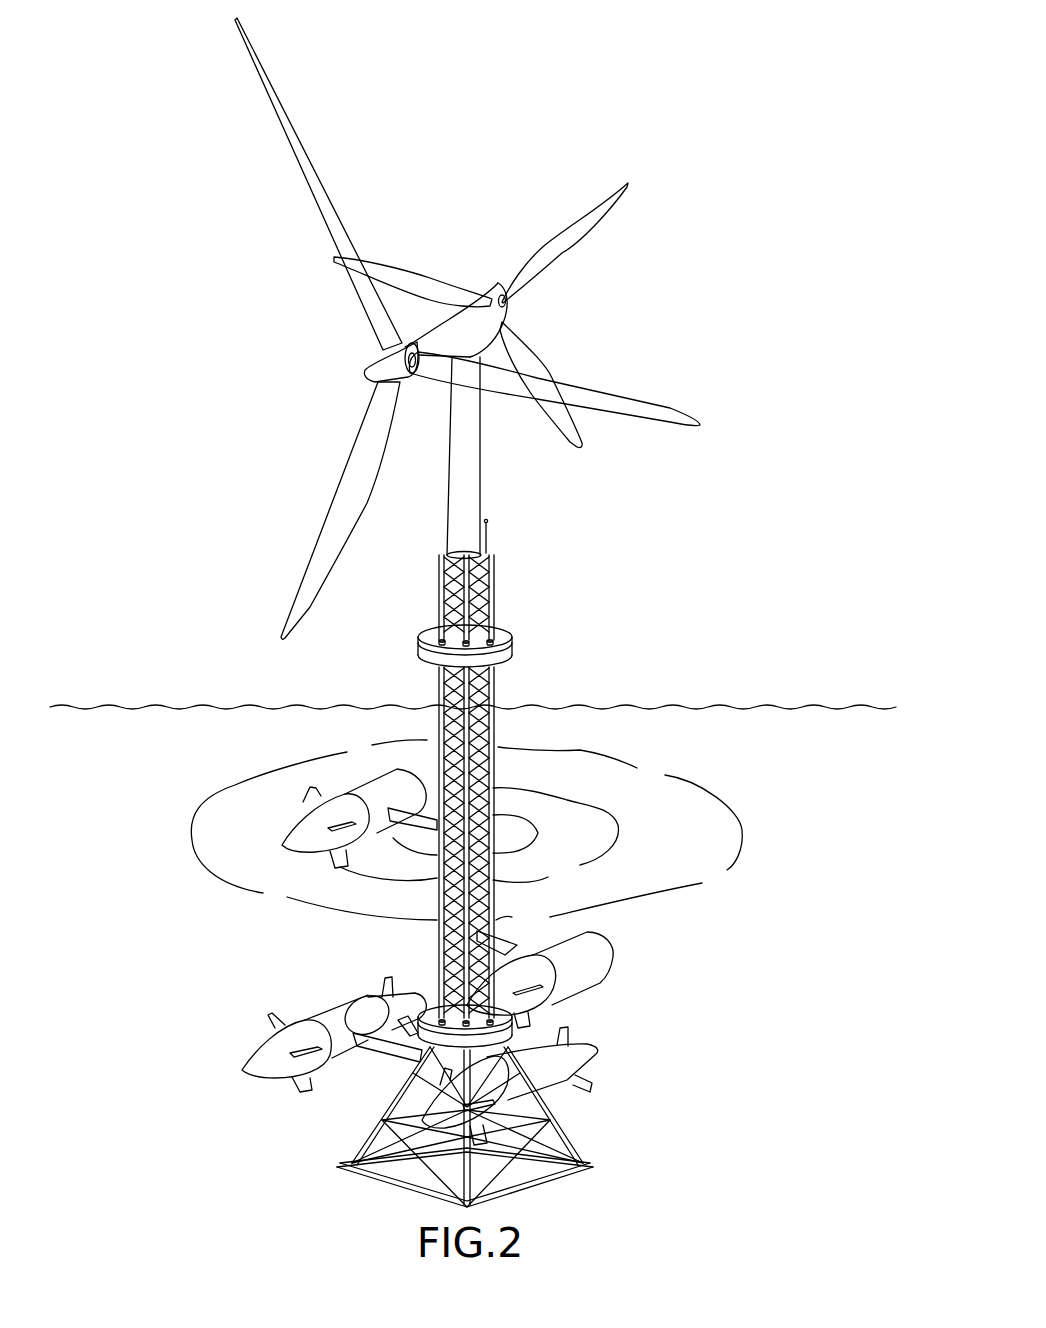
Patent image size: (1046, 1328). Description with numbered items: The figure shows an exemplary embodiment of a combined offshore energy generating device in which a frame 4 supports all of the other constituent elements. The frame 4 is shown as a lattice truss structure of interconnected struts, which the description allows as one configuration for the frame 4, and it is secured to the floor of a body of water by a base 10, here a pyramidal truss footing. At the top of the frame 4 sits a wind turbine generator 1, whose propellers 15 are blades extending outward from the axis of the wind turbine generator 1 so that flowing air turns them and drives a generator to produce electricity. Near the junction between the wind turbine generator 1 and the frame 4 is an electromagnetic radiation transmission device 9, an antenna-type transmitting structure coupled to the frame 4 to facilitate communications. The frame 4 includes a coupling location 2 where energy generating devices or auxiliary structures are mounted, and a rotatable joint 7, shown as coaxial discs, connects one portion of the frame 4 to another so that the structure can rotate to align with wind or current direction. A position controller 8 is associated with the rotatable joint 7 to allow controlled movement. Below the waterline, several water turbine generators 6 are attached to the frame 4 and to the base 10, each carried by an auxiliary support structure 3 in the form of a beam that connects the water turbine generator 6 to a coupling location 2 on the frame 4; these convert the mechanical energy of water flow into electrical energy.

The wind turbine generator 1 is at (445, 337).
The coupling location 2 is at (438, 561).
The auxiliary support structure 3 is at (510, 930).
The frame 4 is at (495, 592).
The water turbine generator 6 is at (597, 972).
The rotatable joint 7 is at (427, 1002).
The position controller 8 is at (385, 810).
The electromagnetic radiation transmission device 9 is at (488, 542).
The base 10 is at (580, 1147).
The propellers 15 is at (628, 186).